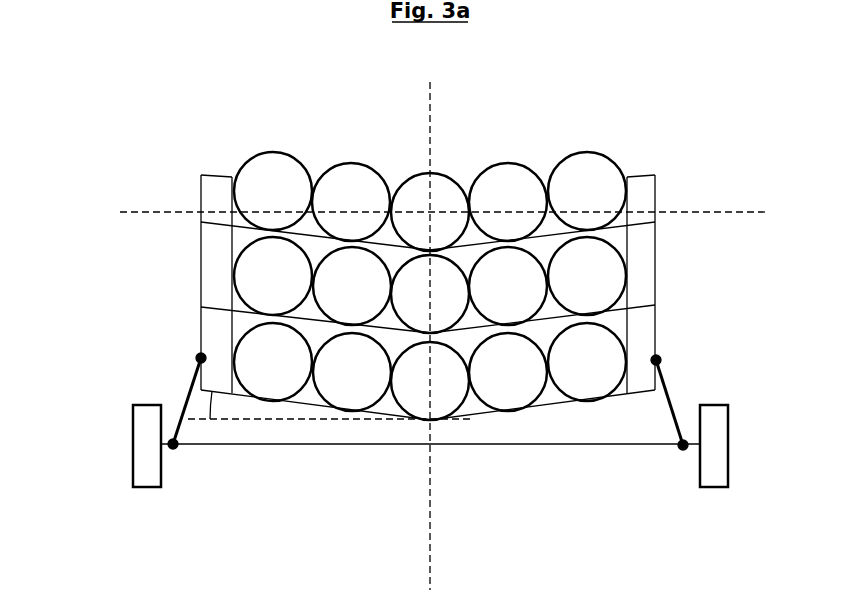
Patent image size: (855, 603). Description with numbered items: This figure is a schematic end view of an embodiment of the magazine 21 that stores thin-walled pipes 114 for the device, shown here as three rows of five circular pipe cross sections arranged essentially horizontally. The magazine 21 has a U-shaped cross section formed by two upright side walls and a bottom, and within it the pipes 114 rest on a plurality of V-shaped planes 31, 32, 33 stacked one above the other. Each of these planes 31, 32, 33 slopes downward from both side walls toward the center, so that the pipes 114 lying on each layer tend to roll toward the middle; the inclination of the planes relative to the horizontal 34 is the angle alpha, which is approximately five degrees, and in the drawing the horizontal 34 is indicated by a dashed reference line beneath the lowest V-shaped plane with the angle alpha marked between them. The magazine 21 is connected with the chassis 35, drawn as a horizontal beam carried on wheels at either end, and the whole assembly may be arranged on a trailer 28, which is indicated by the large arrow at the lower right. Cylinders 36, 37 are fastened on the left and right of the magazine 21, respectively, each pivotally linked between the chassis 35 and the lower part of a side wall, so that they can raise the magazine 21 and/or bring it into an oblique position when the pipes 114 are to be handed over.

The magazine 21 is at (130, 242).
The trailer 28 is at (633, 457).
The V-shaped plane 31 is at (662, 183).
The V-shaped plane 32 is at (663, 255).
The V-shaped plane 33 is at (680, 338).
The horizontal 34 is at (307, 420).
The chassis 35 is at (563, 446).
The cylinder 36 is at (193, 383).
The cylinder 37 is at (677, 410).
The thin-walled pipe 114 is at (577, 167).